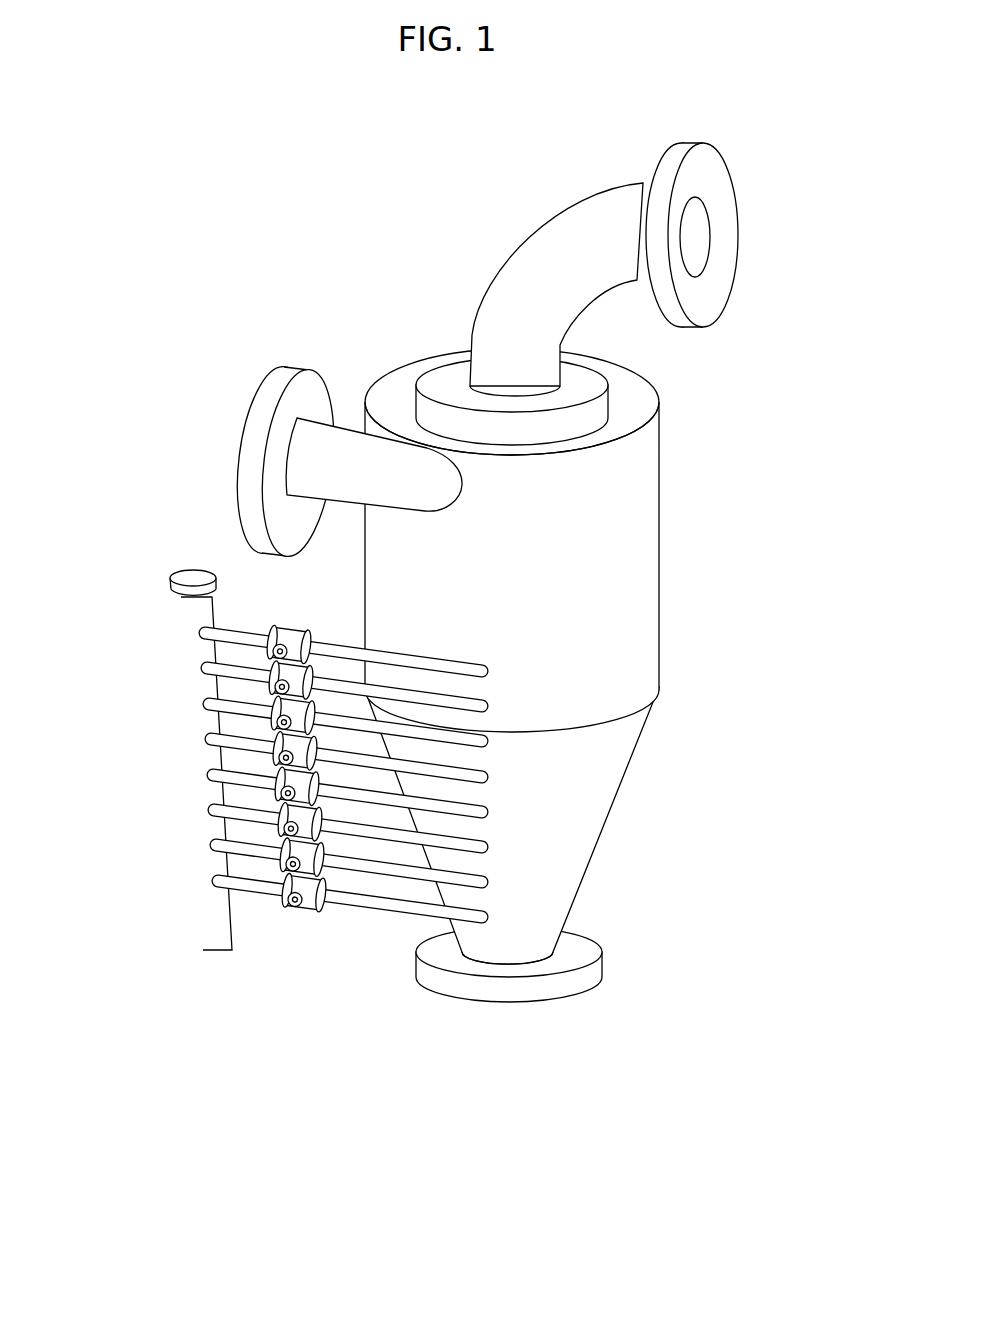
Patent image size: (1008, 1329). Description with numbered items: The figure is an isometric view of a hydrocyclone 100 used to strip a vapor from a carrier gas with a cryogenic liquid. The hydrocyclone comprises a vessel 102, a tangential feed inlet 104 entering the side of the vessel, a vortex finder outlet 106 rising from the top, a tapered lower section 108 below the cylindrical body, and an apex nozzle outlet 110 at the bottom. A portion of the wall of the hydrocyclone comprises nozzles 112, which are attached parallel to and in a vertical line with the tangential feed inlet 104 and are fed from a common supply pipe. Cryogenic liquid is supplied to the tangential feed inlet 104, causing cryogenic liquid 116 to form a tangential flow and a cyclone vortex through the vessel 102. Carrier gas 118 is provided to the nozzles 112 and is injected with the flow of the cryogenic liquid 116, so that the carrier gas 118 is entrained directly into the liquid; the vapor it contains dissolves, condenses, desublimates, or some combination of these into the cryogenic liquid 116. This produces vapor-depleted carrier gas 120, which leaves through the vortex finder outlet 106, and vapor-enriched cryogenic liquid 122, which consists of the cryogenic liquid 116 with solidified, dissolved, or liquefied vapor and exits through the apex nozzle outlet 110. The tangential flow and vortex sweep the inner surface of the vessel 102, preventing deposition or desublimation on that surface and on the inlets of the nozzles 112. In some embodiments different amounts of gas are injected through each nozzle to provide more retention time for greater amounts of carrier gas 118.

The hydrocyclone 100 is at (217, 160).
The vessel 102 is at (647, 557).
The tangential feed inlet 104 is at (305, 383).
The vortex finder outlet 106 is at (560, 227).
The tapered lower section 108 is at (600, 800).
The apex nozzle outlet 110 is at (597, 973).
The nozzles 112 is at (373, 903).
The cryogenic liquid 116 is at (230, 443).
The carrier gas 118 is at (218, 962).
The vapor-depleted carrier gas 120 is at (700, 240).
The vapor-enriched cryogenic liquid 122 is at (512, 1130).